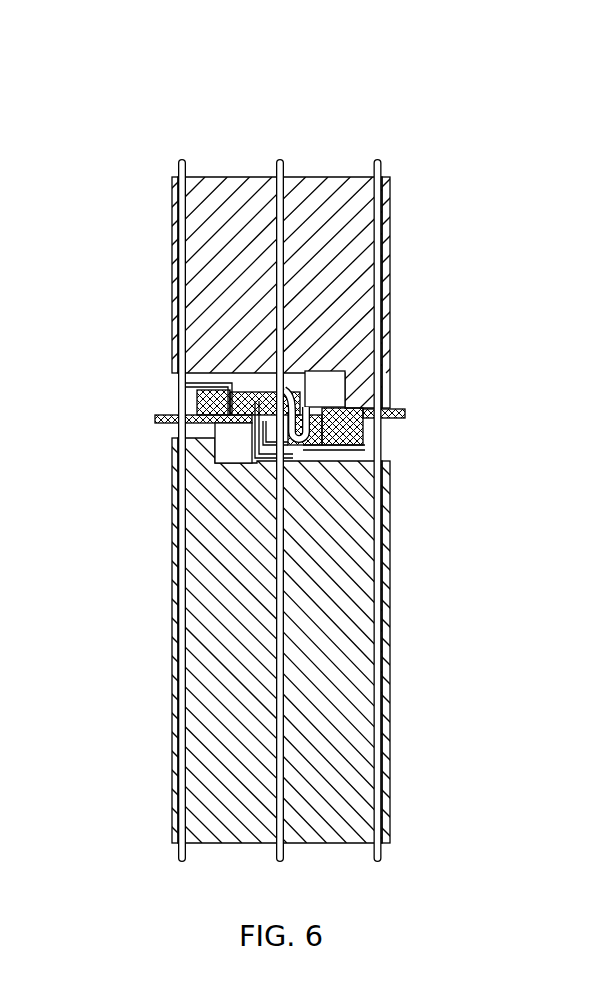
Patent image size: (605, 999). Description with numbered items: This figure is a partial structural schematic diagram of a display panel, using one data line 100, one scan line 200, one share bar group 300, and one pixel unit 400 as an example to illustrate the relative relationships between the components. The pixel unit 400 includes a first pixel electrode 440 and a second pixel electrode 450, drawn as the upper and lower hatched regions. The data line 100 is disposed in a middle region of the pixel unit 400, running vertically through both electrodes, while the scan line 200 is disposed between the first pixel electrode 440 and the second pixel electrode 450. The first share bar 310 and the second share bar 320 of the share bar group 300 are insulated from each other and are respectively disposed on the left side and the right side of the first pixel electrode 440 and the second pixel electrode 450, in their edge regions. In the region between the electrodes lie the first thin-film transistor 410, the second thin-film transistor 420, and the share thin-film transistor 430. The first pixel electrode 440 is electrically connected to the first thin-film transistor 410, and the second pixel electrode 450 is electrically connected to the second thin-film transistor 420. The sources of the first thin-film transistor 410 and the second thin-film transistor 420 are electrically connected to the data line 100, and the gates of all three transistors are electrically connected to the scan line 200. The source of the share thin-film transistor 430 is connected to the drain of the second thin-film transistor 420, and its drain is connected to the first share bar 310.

The pixel unit 400 is at (113, 95).
The share bar group 300 is at (377, 140).
The first share bar 310 is at (183, 240).
The second share bar 320 is at (382, 237).
The data line 100 is at (283, 297).
The scan line 200 is at (167, 416).
The first thin-film transistor 410 is at (332, 405).
The second thin-film transistor 420 is at (298, 457).
The share thin-film transistor 430 is at (212, 423).
The first pixel electrode 440 is at (356, 308).
The second pixel electrode 450 is at (352, 620).